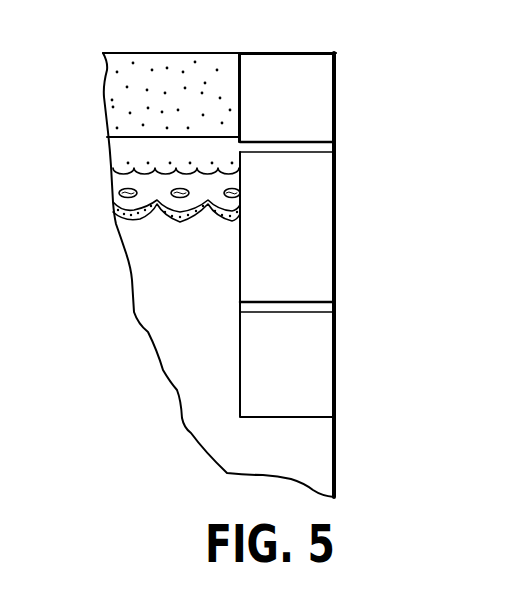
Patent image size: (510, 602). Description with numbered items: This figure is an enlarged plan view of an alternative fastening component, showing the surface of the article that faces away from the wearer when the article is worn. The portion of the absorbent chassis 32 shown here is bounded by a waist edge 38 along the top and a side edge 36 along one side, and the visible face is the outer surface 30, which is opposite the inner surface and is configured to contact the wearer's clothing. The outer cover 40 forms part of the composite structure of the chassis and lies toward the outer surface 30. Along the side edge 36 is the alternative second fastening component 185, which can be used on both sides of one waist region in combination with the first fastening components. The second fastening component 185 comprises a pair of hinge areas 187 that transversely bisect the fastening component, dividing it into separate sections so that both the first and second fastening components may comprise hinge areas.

The outer surface 30 is at (163, 329).
The absorbent chassis 32 is at (118, 117).
The side edge 36 is at (336, 470).
The waist edge 38 is at (180, 53).
The outer cover 40 is at (140, 252).
The second fastening component 185 is at (308, 98).
The hinge area 187 is at (317, 145).